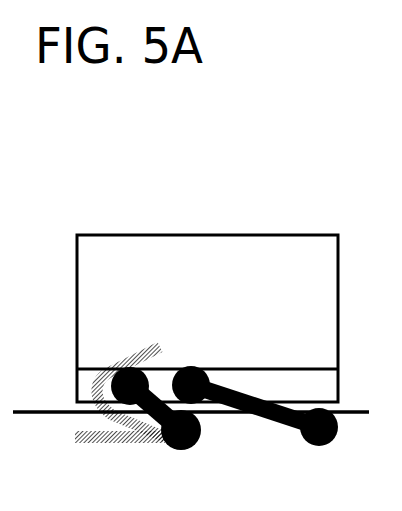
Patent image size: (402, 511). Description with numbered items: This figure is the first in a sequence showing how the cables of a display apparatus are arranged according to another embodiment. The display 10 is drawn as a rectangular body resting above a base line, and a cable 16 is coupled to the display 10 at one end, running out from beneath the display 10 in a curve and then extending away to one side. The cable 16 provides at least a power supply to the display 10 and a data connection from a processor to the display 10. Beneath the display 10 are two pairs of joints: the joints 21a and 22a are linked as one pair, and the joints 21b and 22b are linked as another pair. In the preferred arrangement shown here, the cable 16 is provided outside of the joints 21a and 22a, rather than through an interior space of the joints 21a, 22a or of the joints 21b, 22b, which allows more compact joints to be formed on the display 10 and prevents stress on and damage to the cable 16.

The display 10 is at (207, 293).
The cable 16 is at (110, 410).
The joint 21a is at (128, 361).
The joint 21b is at (198, 370).
The joint 22a is at (169, 448).
The joint 22b is at (305, 441).